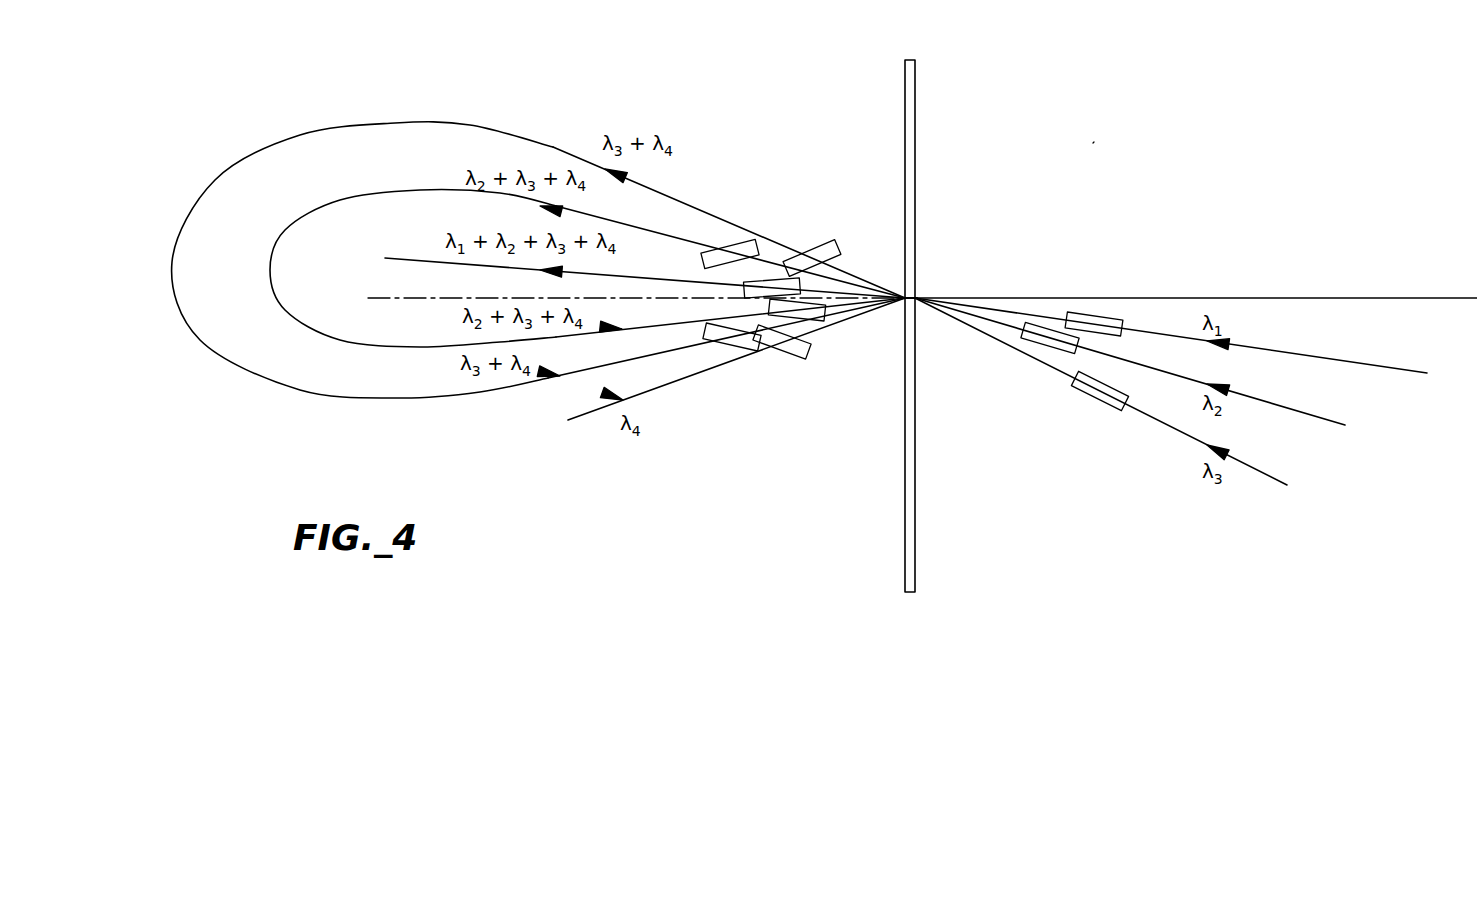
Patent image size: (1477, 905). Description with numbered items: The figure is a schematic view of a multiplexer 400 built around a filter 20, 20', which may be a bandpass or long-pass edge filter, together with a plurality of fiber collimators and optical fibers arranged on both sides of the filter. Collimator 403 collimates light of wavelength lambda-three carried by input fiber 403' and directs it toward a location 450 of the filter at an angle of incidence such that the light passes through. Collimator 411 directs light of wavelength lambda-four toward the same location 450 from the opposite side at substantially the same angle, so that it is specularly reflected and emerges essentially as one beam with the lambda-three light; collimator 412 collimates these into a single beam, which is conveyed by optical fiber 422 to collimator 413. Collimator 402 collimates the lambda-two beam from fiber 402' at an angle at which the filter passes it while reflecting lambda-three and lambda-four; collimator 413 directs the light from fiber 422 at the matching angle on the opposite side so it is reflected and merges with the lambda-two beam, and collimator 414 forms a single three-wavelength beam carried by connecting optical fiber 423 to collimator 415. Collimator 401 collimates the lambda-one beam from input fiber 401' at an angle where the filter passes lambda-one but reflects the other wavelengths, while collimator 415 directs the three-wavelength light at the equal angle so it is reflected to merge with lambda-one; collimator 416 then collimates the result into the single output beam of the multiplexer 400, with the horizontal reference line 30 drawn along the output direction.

The filter 20 is at (973, 326).
The filter 20' is at (973, 326).
The optical axis 30 is at (1292, 298).
The multiplexer 400 is at (1093, 143).
The collimator 401 is at (1109, 297).
The collimator 402 is at (1079, 291).
The collimator 403 is at (1067, 404).
The input fiber 401' is at (1182, 335).
The input fiber 402' is at (1156, 361).
The input fiber 403' is at (1129, 391).
The collimator 411 is at (783, 352).
The collimator 412 is at (822, 240).
The collimator 413 is at (725, 347).
The collimator 414 is at (727, 242).
The collimator 415 is at (810, 322).
The collimator 416 is at (768, 278).
The optical fiber 422 is at (424, 123).
The connecting optical fiber 423 is at (333, 205).
The location 450 is at (917, 298).